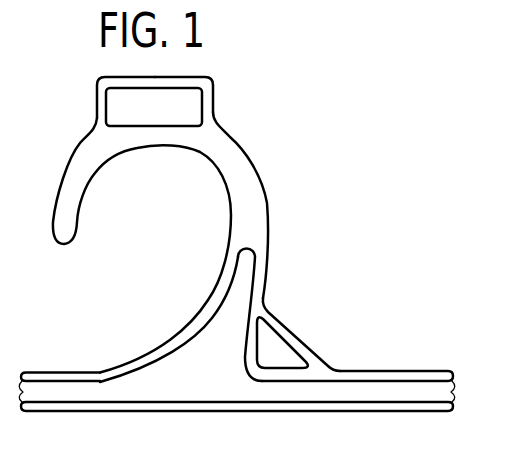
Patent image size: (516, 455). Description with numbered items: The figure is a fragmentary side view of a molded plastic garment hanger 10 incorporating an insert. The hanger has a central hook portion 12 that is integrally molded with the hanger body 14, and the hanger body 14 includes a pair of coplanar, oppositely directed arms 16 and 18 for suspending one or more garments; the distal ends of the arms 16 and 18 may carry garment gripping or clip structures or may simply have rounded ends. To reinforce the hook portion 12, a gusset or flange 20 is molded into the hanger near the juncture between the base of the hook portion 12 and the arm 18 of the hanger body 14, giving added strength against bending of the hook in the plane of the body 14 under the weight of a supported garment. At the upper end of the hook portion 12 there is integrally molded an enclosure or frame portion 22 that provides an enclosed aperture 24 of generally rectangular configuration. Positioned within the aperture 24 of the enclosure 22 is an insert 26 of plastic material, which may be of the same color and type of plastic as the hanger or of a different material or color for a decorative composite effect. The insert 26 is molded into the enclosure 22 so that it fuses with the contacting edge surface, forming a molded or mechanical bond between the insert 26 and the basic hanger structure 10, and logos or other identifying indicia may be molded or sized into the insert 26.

The molded plastic garment hanger 10 is at (273, 149).
The central hook portion 12 is at (112, 165).
The hanger body 14 is at (115, 411).
The arm 16 is at (82, 371).
The arm 18 is at (380, 370).
The gusset or flange 20 is at (293, 330).
The enclosure or frame portion 22 is at (180, 76).
The enclosed aperture 24 is at (120, 80).
The insert 26 is at (114, 109).